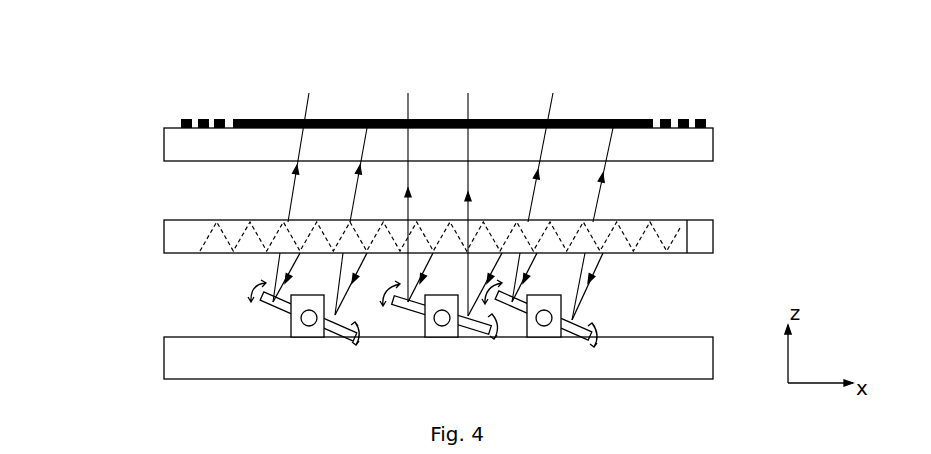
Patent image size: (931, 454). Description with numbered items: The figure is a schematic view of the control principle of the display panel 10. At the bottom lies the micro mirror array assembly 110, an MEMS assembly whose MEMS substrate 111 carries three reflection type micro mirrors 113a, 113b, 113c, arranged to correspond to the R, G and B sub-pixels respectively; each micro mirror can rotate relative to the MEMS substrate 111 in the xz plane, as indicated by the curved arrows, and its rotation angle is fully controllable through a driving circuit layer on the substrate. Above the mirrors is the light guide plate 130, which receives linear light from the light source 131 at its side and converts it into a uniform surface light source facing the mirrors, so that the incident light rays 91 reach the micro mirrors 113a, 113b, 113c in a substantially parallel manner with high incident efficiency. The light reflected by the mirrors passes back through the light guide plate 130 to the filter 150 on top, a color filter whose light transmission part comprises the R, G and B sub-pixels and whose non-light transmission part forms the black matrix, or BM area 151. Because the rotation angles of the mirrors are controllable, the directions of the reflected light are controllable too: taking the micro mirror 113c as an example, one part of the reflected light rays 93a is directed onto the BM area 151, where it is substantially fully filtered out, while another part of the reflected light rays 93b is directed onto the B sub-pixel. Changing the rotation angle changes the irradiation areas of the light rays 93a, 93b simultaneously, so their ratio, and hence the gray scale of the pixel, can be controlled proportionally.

The display panel 10 is at (146, 68).
The filter 150 is at (164, 137).
The BM area 151 is at (368, 127).
The light guide plate 130 is at (164, 235).
The light source 131 is at (705, 230).
The micro mirror array assembly 110 is at (88, 312).
The MEMS substrate 111 is at (172, 353).
The micro mirror 113a is at (267, 303).
The micro mirror 113b is at (418, 311).
The micro mirror 113c is at (597, 327).
The incident light rays 91 is at (598, 271).
The reflected light rays 93a is at (612, 190).
The reflected light rays 93b is at (542, 190).